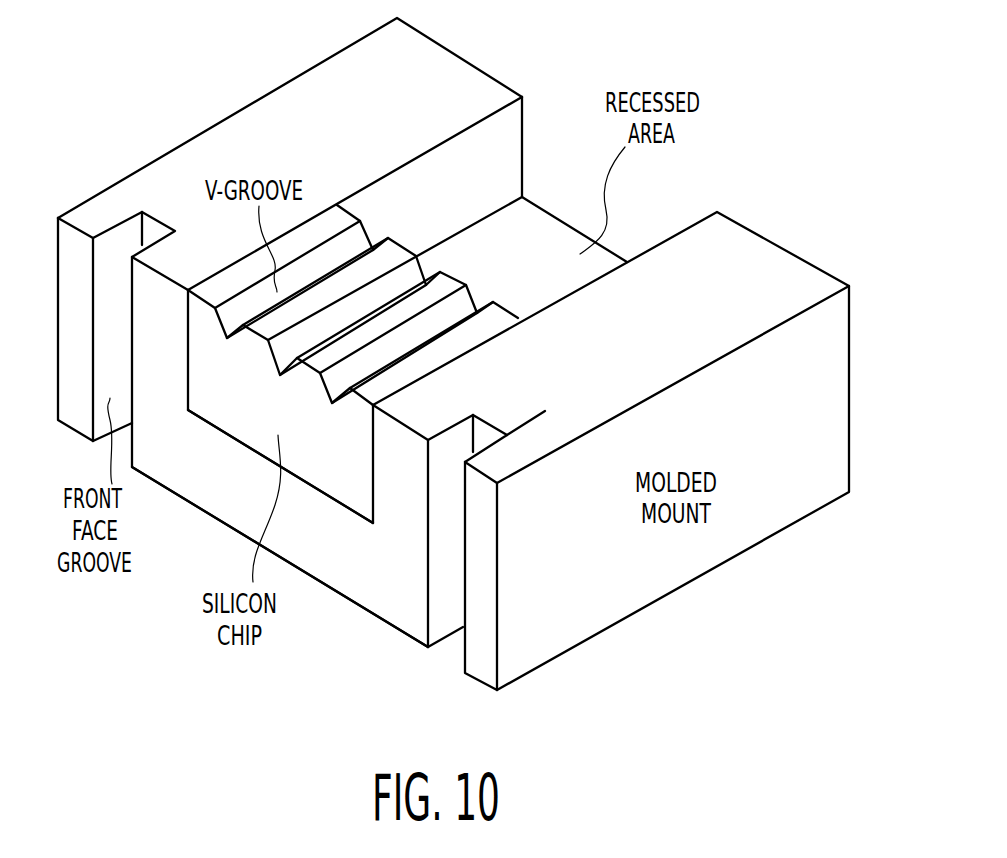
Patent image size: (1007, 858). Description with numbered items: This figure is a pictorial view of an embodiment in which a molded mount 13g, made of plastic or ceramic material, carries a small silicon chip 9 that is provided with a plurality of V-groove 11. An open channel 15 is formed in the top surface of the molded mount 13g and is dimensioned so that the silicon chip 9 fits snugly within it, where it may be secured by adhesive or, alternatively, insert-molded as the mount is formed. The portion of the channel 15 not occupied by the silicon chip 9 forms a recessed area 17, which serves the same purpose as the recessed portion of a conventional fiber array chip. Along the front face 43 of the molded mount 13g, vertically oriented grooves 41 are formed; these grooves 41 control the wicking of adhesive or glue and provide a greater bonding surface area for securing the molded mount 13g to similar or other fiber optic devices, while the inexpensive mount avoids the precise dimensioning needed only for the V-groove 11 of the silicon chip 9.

The silicon chip 9 is at (370, 310).
The V-groove 11 is at (355, 237).
The molded mount 13g is at (453, 377).
The channel 15 is at (467, 218).
The recessed area 17 is at (603, 265).
The vertical grooves 41 is at (113, 245).
The front face 43 is at (227, 510).